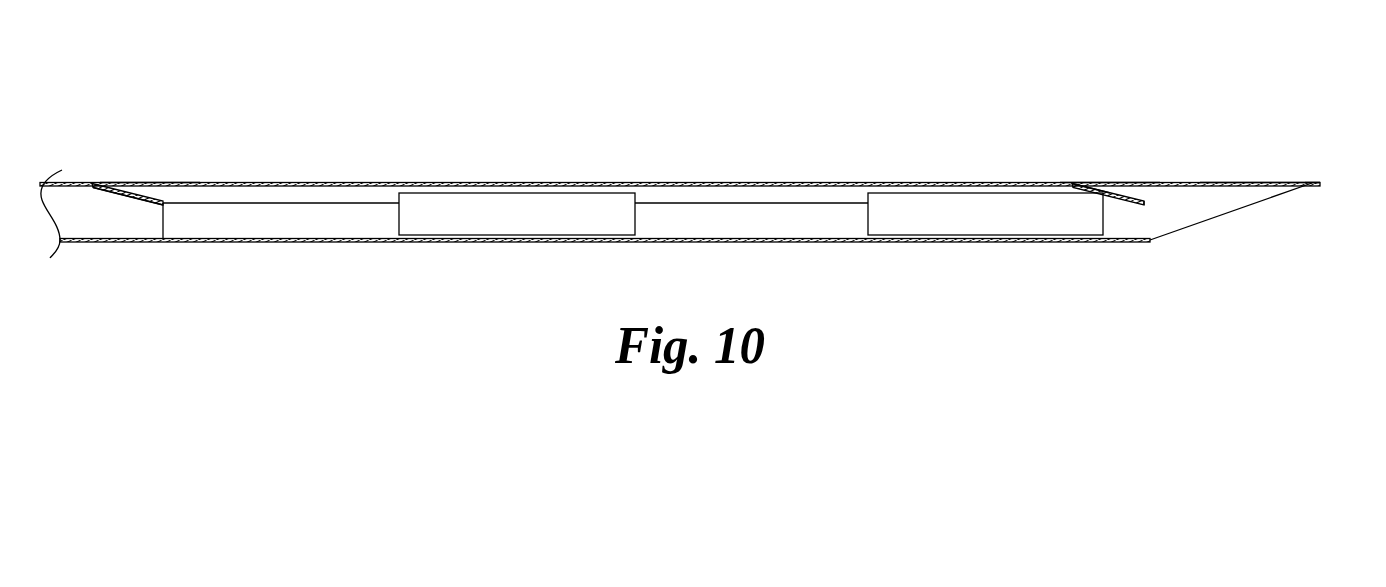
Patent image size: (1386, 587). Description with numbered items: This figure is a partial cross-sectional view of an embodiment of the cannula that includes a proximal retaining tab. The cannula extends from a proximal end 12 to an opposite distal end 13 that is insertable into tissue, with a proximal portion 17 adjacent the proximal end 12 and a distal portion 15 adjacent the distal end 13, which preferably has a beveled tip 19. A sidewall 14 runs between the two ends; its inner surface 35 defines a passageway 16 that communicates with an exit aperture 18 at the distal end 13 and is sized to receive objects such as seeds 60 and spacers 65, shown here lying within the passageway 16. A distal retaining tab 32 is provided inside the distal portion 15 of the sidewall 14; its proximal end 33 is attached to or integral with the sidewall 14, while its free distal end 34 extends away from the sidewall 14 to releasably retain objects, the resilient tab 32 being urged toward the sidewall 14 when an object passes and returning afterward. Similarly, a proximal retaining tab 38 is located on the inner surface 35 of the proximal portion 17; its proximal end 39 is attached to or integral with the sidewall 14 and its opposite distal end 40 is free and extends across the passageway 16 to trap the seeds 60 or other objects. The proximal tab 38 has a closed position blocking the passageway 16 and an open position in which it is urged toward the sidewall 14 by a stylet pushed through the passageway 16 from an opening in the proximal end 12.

The proximal end 12 is at (60, 172).
The distal end 13 is at (1220, 182).
The sidewall 14 is at (1147, 245).
The distal portion 15 is at (1108, 185).
The passageway 16 is at (118, 217).
The proximal portion 17 is at (157, 181).
The exit aperture 18 is at (1237, 210).
The beveled tip 19 is at (1320, 183).
The distal retaining tab 32 is at (1130, 193).
The proximal end of distal retaining tab 33 is at (1082, 182).
The distal end of distal retaining tab 34 is at (1143, 193).
The inner surface 35 is at (700, 185).
The proximal retaining tab 38 is at (137, 189).
The proximal end of proximal retaining tab 39 is at (98, 182).
The distal end of proximal retaining tab 40 is at (165, 200).
The seed 60 is at (1005, 217).
The spacer 65 is at (345, 220).